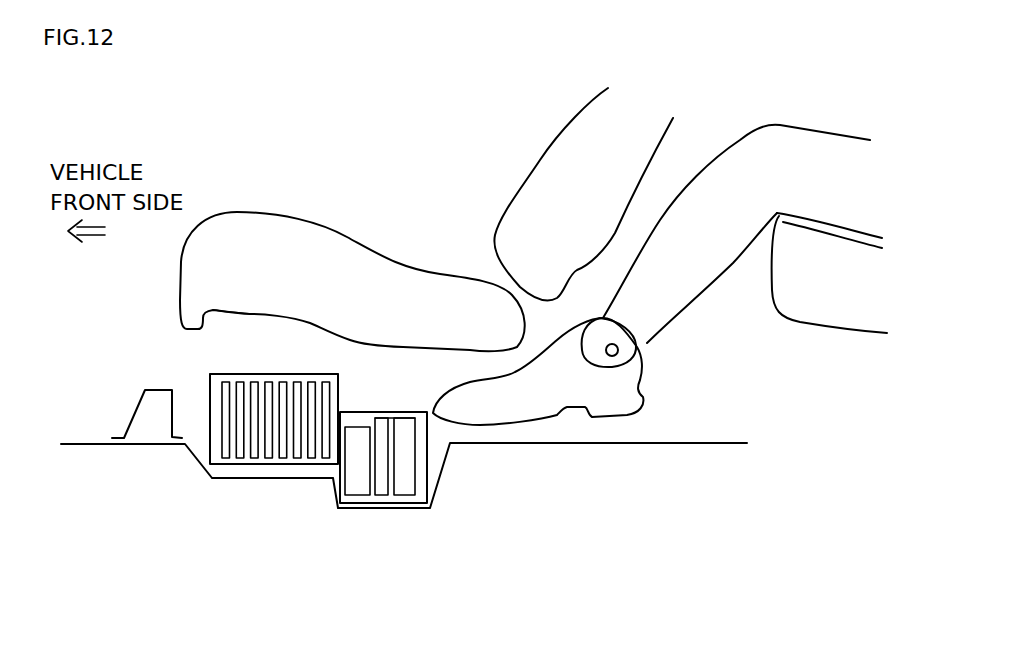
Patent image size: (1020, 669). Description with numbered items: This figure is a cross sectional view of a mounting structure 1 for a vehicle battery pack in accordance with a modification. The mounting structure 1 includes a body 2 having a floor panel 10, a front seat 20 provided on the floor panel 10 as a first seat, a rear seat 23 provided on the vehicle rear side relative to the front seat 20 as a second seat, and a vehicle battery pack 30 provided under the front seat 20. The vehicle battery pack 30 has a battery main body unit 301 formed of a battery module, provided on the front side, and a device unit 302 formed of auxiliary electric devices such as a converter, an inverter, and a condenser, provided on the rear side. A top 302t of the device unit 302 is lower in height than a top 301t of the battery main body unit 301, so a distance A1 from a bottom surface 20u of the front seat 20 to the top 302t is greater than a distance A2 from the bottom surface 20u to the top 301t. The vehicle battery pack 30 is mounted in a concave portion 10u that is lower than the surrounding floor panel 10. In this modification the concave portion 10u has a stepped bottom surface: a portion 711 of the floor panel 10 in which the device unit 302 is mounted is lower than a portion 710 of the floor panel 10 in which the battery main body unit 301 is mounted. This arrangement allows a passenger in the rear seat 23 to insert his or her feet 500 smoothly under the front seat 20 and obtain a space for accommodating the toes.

The mounting structure 1 is at (391, 162).
The body 2 is at (102, 463).
The floor panel 10 is at (698, 443).
The concave portion 10u is at (402, 572).
The front seat 20 is at (322, 222).
The bottom surface 20u is at (254, 311).
The rear seat 23 is at (818, 327).
The vehicle battery pack 30 is at (168, 348).
The battery main body unit 301 is at (256, 382).
The top of battery main body unit 301t is at (305, 374).
The device unit 302 is at (381, 423).
The top of device unit 302t is at (412, 418).
The feet 500 is at (813, 130).
The portion of floor panel 710 is at (283, 478).
The portion of floor panel 711 is at (375, 503).
The distance A1 is at (401, 403).
The distance A2 is at (336, 365).